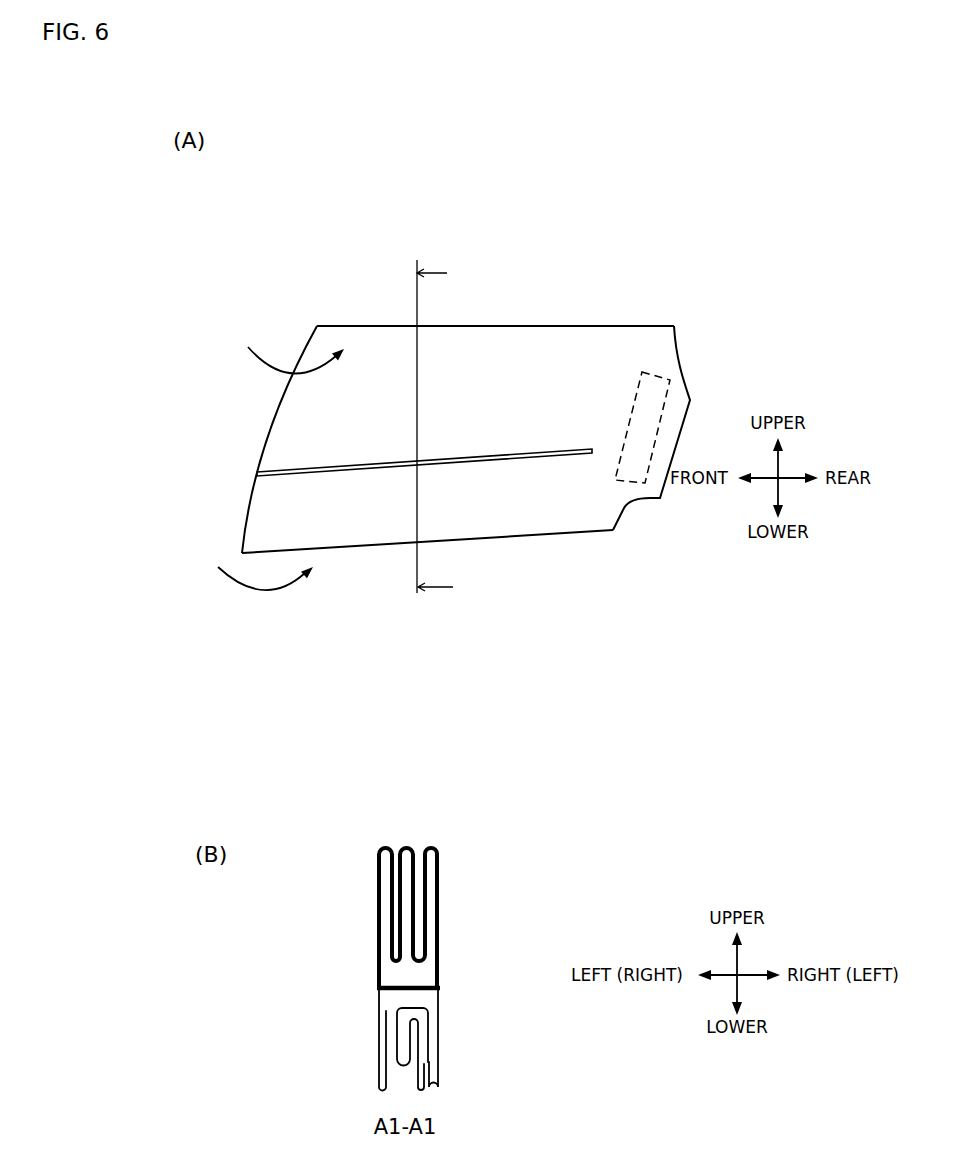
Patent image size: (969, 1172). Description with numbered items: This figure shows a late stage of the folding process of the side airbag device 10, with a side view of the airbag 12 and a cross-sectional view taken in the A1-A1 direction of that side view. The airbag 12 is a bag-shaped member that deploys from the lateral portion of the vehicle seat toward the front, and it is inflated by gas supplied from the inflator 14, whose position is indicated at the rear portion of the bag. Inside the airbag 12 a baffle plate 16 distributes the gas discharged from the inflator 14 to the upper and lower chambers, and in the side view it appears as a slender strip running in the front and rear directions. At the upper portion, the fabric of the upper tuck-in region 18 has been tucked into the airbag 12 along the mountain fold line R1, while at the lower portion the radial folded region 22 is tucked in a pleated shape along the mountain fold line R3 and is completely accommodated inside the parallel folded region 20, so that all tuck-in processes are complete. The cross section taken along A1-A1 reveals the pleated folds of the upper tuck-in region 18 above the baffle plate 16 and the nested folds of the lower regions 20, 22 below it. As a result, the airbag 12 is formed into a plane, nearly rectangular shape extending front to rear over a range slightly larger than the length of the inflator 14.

The side airbag device 10 is at (245, 290).
The airbag 12 is at (365, 828).
The inflator 14 is at (665, 375).
The baffle plate 16 is at (310, 465).
The upper tuck-in region 18 is at (455, 843).
The parallel folded region 20 is at (455, 1007).
The radial folded region 22 is at (451, 1040).
The mountain fold line R1 is at (353, 325).
The mountain fold line R3 is at (577, 533).
The A1-A1 section direction A1 is at (430, 428).